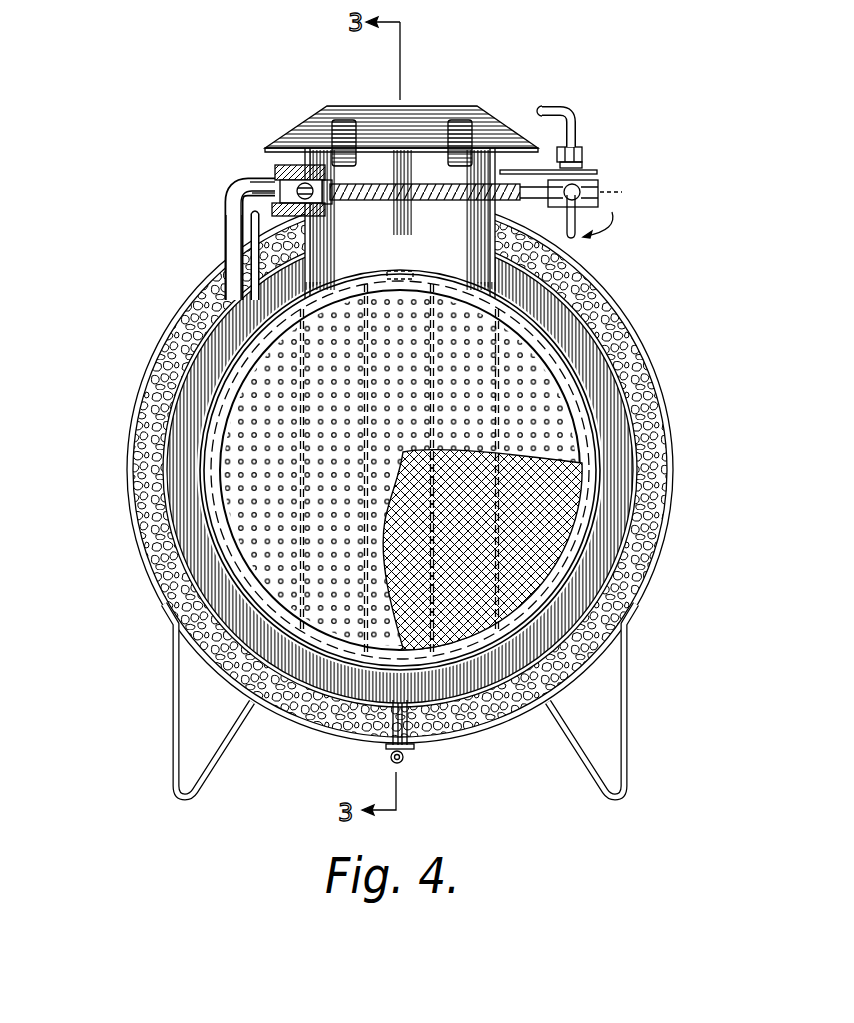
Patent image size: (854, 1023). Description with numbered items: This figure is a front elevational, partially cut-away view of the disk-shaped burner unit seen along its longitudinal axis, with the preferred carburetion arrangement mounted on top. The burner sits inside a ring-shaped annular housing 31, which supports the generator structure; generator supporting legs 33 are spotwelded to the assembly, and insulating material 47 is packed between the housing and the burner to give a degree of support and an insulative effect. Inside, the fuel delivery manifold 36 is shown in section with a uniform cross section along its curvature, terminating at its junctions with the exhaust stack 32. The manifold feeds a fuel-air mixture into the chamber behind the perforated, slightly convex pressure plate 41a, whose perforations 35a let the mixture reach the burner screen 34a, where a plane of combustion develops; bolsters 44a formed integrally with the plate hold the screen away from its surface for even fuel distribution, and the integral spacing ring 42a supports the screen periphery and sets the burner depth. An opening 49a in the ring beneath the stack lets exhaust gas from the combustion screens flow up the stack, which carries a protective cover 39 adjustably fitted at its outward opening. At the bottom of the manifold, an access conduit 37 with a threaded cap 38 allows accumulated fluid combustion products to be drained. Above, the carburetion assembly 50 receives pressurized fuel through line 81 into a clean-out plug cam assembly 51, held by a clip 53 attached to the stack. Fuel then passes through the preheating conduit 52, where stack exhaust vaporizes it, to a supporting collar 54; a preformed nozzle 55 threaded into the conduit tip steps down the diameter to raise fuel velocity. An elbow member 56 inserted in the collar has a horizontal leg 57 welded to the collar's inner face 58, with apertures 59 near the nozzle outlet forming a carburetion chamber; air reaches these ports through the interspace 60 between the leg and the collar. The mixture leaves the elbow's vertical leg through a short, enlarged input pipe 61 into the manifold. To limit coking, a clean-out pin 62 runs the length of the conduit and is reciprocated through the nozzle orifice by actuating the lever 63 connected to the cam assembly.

The annular housing 31 is at (640, 345).
The exhaust stack 32 is at (340, 180).
The generator supporting legs 33 is at (172, 695).
The burner screen 34a is at (585, 570).
The perforations 35a is at (240, 500).
The fuel delivery manifold 36 is at (400, 470).
The access conduit 37 is at (410, 742).
The cap 38 is at (390, 757).
The protective cover 39 is at (470, 106).
The pressure plate 41a is at (298, 600).
The spacing ring 42a is at (262, 548).
The bolsters 44a is at (583, 533).
The insulating material 47 is at (163, 345).
The opening 49a is at (392, 272).
The carburetion assembly 50 is at (202, 189).
The clean-out plug cam assembly 51 is at (598, 184).
The preheating conduit 52 is at (396, 183).
The clip 53 is at (592, 168).
The supporting collar 54 is at (233, 212).
The nozzle 55 is at (325, 185).
The elbow member 56 is at (226, 186).
The horizontal leg 57 is at (235, 178).
The inner face 58 is at (288, 168).
The apertures 59 is at (283, 192).
The interspace 60 is at (243, 200).
The input pipe 61 is at (251, 245).
The clean-out pin 62 is at (380, 185).
The lever 63 is at (576, 238).
The fuel line 81 is at (584, 128).